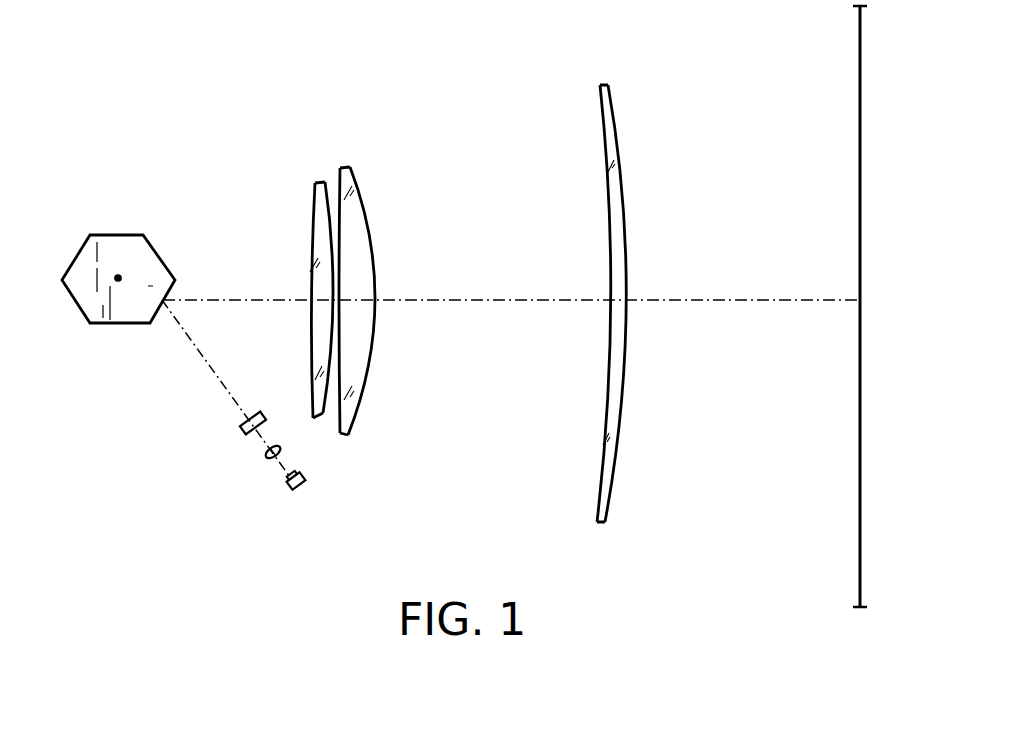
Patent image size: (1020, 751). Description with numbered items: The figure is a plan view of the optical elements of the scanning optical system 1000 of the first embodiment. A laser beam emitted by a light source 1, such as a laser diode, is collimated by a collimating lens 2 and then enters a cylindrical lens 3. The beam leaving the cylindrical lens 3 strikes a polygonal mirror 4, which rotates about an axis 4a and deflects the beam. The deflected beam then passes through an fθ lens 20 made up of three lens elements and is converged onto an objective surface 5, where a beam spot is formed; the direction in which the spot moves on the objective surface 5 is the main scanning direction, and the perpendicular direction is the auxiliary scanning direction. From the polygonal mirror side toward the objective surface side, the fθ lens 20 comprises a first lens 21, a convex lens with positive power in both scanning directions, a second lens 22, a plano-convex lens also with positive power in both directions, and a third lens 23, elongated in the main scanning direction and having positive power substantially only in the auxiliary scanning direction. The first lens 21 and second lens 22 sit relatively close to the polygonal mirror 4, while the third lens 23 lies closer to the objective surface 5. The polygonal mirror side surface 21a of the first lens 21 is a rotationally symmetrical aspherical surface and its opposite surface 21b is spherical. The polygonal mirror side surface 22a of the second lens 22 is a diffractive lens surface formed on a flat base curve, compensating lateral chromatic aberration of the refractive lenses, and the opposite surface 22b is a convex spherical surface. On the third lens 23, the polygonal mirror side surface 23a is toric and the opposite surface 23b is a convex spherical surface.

The scanning optical system 1000 is at (256, 74).
The light source 1 is at (289, 486).
The collimating lens 2 is at (266, 457).
The cylindrical lens 3 is at (243, 426).
The polygonal mirror 4 is at (118, 282).
The axis 4a is at (118, 275).
The objective surface 5 is at (857, 487).
The fθ lens 20 is at (461, 313).
The first lens 21 is at (305, 318).
The polygonal mirror side surface of first lens 21a is at (311, 214).
The opposite surface of first lens 21b is at (327, 185).
The second lens 22 is at (375, 301).
The diffractive lens surface 22a is at (340, 178).
The opposite surface of second lens 22b is at (410, 216).
The third lens 23 is at (604, 303).
The polygonal mirror side surface of third lens 23a is at (607, 178).
The opposite surface of third lens 23b is at (618, 140).